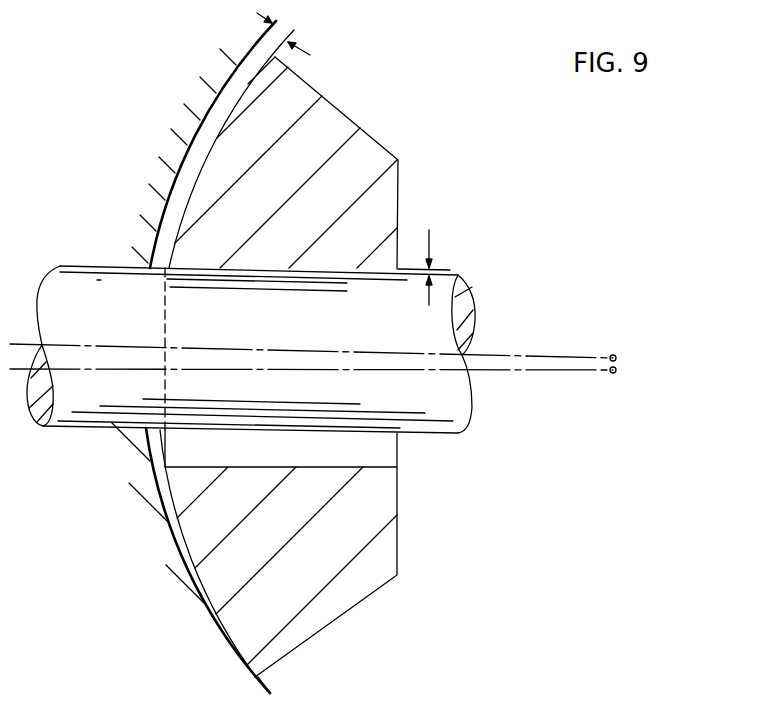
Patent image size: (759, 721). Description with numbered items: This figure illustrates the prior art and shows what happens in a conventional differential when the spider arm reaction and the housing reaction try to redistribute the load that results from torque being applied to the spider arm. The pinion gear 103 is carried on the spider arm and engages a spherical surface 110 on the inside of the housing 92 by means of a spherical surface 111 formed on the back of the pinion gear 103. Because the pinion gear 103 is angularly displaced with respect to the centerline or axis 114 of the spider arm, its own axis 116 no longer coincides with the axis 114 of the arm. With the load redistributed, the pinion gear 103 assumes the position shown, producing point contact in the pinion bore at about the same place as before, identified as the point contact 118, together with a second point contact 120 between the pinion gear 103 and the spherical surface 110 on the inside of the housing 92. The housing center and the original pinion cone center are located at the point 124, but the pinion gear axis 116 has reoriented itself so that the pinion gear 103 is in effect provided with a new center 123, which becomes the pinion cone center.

The housing 92 is at (219, 81).
The spherical surface 110 is at (207, 108).
The spherical surface 111 is at (186, 203).
The pinion gear 103 is at (374, 156).
The point contact 118 is at (165, 270).
The centerline or axis 114 is at (297, 350).
The axis 116 is at (348, 370).
The housing center and pinion cone center 124 is at (616, 355).
The new center 123 is at (616, 373).
The point contact 120 is at (258, 677).